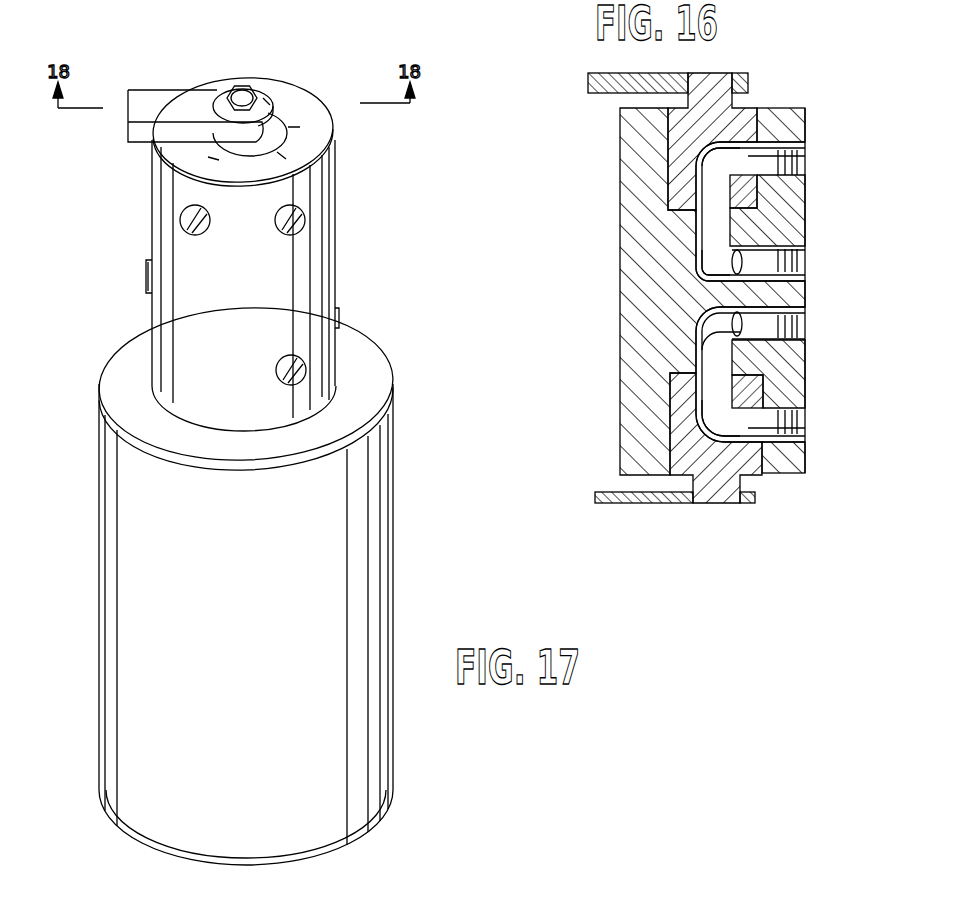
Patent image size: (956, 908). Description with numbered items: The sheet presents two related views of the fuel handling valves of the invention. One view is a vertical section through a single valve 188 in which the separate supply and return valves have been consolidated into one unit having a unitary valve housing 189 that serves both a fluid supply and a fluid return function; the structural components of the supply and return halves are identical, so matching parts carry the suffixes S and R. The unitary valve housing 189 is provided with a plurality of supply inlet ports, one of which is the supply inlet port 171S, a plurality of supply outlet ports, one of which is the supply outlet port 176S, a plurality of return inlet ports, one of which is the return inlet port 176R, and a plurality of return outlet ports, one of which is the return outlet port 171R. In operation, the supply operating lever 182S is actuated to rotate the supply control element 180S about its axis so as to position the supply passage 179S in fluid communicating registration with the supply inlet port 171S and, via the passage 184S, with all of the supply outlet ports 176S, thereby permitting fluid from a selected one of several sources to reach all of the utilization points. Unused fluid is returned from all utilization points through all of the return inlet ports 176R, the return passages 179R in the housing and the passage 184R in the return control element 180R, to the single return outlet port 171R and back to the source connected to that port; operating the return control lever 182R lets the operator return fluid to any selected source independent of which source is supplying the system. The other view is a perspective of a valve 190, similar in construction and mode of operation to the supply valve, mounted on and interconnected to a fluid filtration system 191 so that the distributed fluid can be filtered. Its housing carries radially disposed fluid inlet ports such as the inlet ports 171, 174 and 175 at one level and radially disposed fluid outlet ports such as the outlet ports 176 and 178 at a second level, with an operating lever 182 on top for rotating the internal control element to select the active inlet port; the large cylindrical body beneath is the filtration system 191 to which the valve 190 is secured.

In FIG. 17, the inlet port 171 is at (332, 172).
In FIG. 17, the inlet port 174 is at (181, 222).
In FIG. 17, the inlet port 175 is at (284, 236).
In FIG. 17, the outlet port 176 is at (336, 313).
In FIG. 17, the outlet port 178 is at (279, 359).
In FIG. 17, the operating lever 182 is at (162, 93).
In FIG. 17, the valve 190 is at (283, 275).
In FIG. 17, the fluid filtration system 191 is at (398, 527).
In FIG. 16, the return outlet port 171R is at (793, 153).
In FIG. 16, the supply inlet port 171S is at (800, 426).
In FIG. 16, the return inlet port 176R is at (800, 255).
In FIG. 16, the supply outlet port 176S is at (800, 315).
In FIG. 16, the return passage 179R is at (710, 231).
In FIG. 16, the supply passage 179S is at (712, 407).
In FIG. 16, the return control element 180R is at (738, 112).
In FIG. 16, the supply control element 180S is at (755, 463).
In FIG. 16, the return control lever 182R is at (612, 88).
In FIG. 16, the supply operating lever 182S is at (615, 500).
In FIG. 16, the return passage 184R is at (712, 163).
In FIG. 16, the supply passage 184S is at (712, 326).
In FIG. 16, the single valve 188 is at (806, 112).
In FIG. 16, the unitary valve housing 189 is at (628, 293).